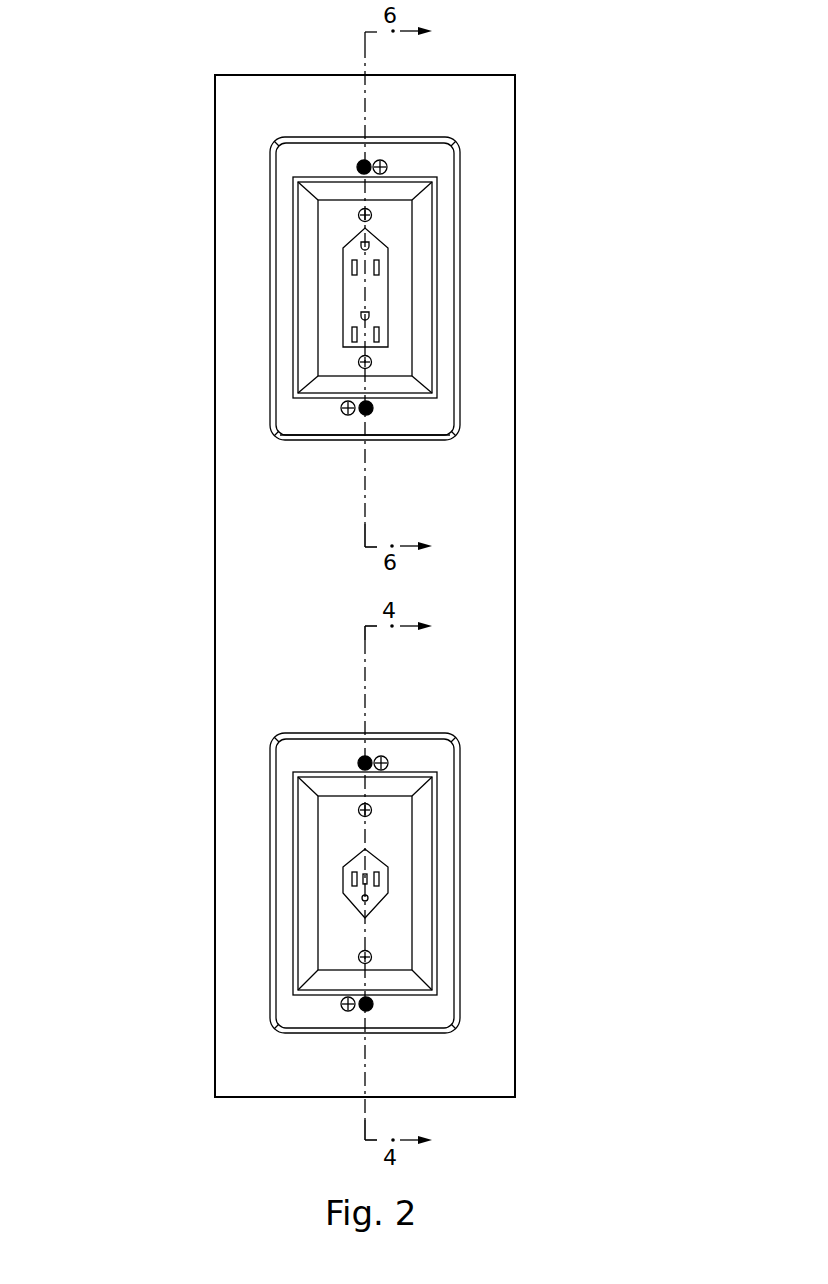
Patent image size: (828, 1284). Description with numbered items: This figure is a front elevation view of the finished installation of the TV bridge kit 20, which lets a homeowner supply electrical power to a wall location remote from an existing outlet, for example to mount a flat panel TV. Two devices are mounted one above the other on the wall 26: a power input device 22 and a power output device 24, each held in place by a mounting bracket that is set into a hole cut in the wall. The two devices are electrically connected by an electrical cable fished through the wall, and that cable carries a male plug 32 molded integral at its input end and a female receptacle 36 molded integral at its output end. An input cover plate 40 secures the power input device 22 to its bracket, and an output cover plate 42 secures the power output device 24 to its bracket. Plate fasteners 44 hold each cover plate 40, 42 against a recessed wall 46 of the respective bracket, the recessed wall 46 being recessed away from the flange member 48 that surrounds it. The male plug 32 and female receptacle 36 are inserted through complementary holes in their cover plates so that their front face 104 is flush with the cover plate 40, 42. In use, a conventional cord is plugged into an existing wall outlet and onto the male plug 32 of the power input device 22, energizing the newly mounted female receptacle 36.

The TV bridge kit 20 is at (128, 176).
The power input device 22 is at (452, 733).
The power output device 24 is at (457, 147).
The wall 26 is at (310, 589).
The male plug 32 is at (388, 881).
The female receptacle 36 is at (390, 300).
The input cover plate 40 is at (393, 828).
The output cover plate 42 is at (400, 240).
The plate fasteners 44 is at (357, 361).
The recessed wall 46 is at (418, 359).
The flange member 48 is at (400, 422).
The front face 104 is at (350, 292).